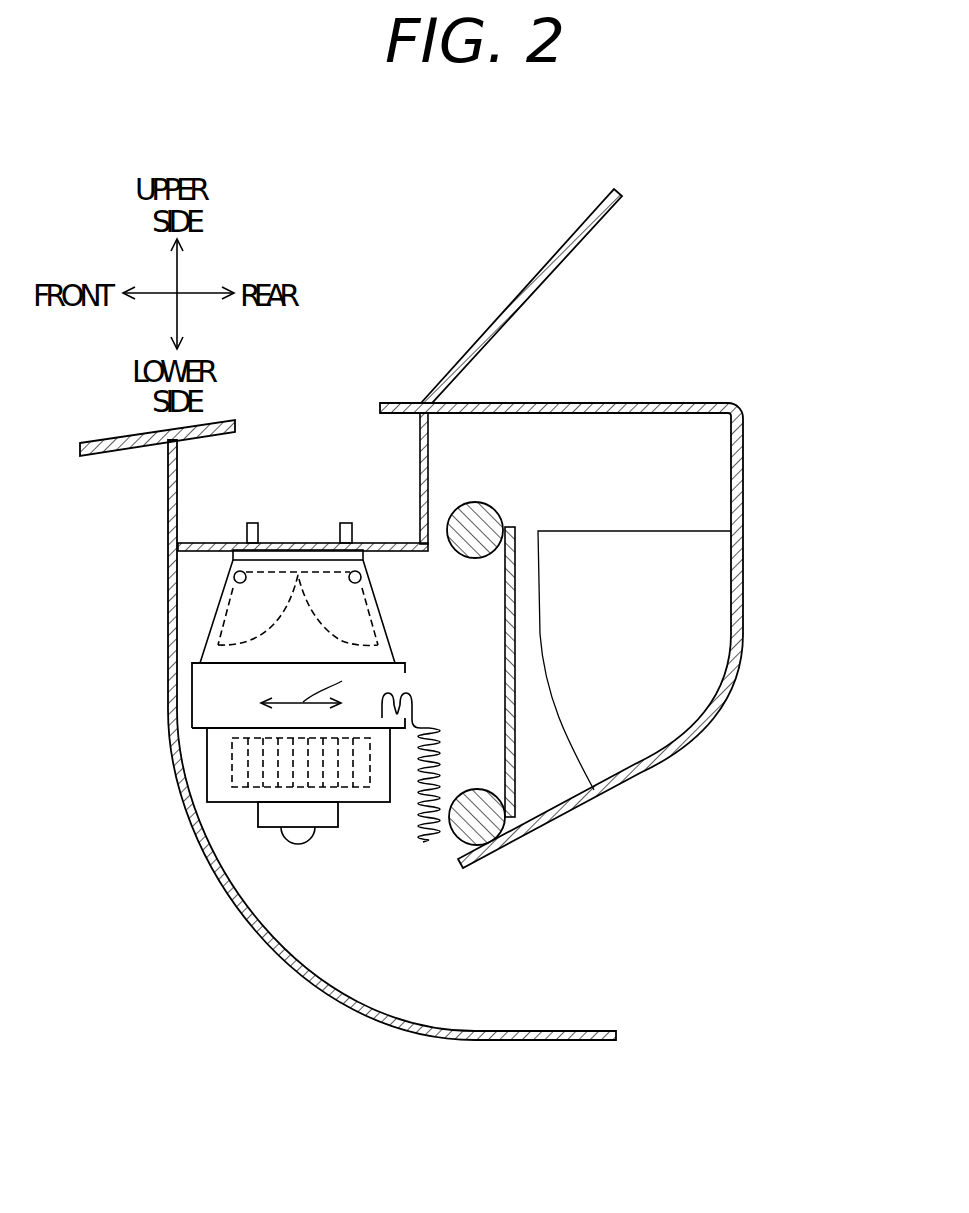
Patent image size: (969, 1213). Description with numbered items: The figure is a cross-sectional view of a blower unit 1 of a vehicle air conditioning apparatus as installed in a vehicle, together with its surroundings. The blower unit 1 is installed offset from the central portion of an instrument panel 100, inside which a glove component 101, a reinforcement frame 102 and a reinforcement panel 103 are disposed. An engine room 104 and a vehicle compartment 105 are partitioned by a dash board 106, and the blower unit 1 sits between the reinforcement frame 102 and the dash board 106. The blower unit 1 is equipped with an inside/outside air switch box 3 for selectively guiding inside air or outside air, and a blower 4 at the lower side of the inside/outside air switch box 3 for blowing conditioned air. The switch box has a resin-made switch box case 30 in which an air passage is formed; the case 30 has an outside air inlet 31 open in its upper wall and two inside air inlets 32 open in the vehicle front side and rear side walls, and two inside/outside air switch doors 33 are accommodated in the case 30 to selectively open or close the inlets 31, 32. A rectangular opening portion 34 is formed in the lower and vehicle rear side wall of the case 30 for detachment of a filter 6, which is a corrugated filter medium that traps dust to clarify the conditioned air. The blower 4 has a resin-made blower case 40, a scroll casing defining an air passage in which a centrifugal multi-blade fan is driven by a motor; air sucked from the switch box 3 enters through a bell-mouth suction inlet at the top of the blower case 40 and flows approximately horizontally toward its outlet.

The blower unit 1 is at (80, 645).
The inside/outside air switch box 3 is at (284, 632).
The blower 4 is at (240, 799).
The filter 6 is at (427, 848).
The switch box case 30 is at (287, 638).
The outside air inlet 31 is at (297, 547).
The inside air inlets 32 is at (234, 577).
The inside/outside air switch doors 33 is at (218, 595).
The rectangular opening portion 34 is at (403, 683).
The blower case 40 is at (217, 782).
The instrument panel 100 is at (700, 403).
The glove component 101 is at (698, 591).
The reinforcement frame 102 is at (478, 503).
The reinforcement panel 103 is at (513, 787).
The engine room 104 is at (100, 829).
The vehicle compartment 105 is at (825, 814).
The dash board 106 is at (240, 912).